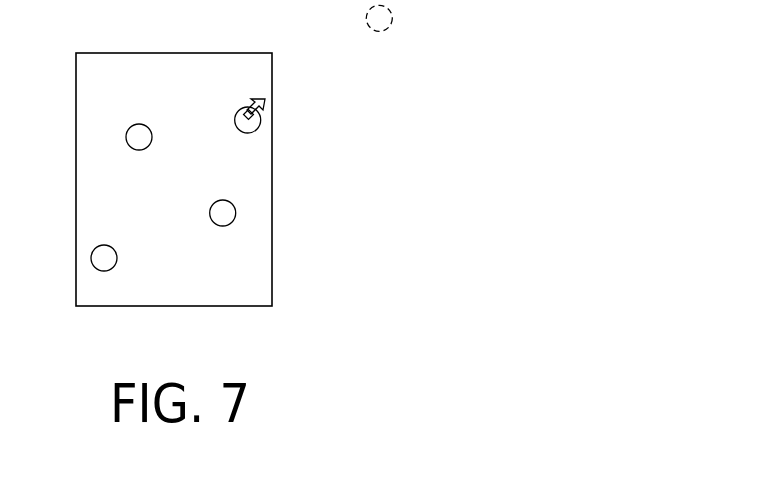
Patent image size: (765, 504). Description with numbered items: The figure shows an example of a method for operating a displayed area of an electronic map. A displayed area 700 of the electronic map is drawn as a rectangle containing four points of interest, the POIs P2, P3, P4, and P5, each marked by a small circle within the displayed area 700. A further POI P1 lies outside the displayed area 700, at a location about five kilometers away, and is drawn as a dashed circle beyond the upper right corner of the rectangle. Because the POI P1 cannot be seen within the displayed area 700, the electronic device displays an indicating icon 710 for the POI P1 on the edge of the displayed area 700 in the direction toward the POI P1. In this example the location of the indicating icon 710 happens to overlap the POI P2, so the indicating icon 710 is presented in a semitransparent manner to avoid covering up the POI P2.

The displayed area 700 is at (272, 217).
The indicating icon 710 is at (266, 107).
The POI P1 is at (397, 21).
The POI P2 is at (234, 121).
The POI P3 is at (124, 261).
The POI P4 is at (204, 216).
The POI P5 is at (139, 119).